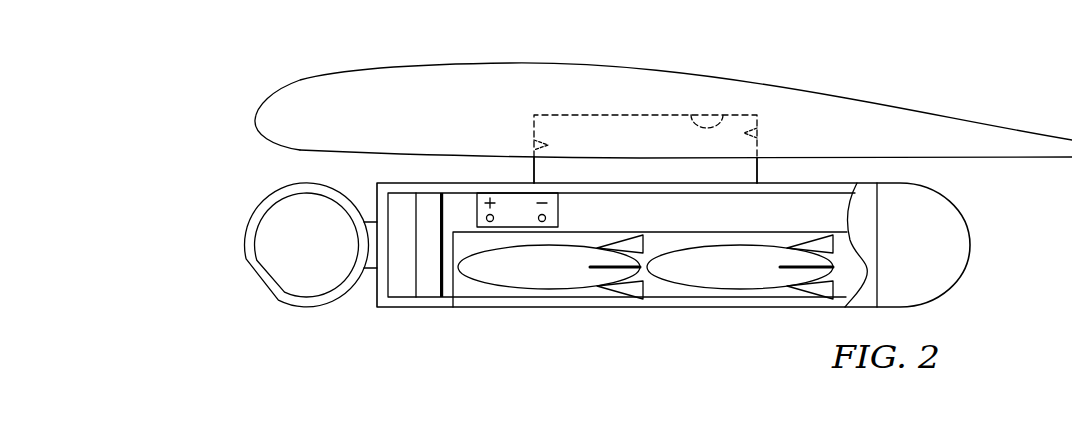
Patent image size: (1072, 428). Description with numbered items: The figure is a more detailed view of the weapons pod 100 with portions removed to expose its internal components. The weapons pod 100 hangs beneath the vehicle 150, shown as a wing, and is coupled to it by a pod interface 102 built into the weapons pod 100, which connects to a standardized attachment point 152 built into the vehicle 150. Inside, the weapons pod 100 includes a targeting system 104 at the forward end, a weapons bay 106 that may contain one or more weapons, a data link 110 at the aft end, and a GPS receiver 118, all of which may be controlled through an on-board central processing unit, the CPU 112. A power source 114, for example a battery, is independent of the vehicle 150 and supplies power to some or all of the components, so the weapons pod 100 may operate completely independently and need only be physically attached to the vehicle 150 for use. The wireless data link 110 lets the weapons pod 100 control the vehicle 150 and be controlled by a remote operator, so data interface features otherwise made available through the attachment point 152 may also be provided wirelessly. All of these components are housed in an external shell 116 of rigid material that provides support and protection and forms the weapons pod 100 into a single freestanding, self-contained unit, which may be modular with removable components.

The weapons pod 100 is at (996, 266).
The pod interface 102 is at (758, 172).
The targeting system 104 is at (328, 256).
The weapons bay 106 is at (658, 287).
The data link 110 is at (936, 258).
The central processing unit 112 is at (426, 287).
The power source 114 is at (509, 199).
The external shell 116 is at (423, 183).
The GPS receiver 118 is at (403, 288).
The vehicle 150 is at (673, 71).
The attachment point 152 is at (722, 115).